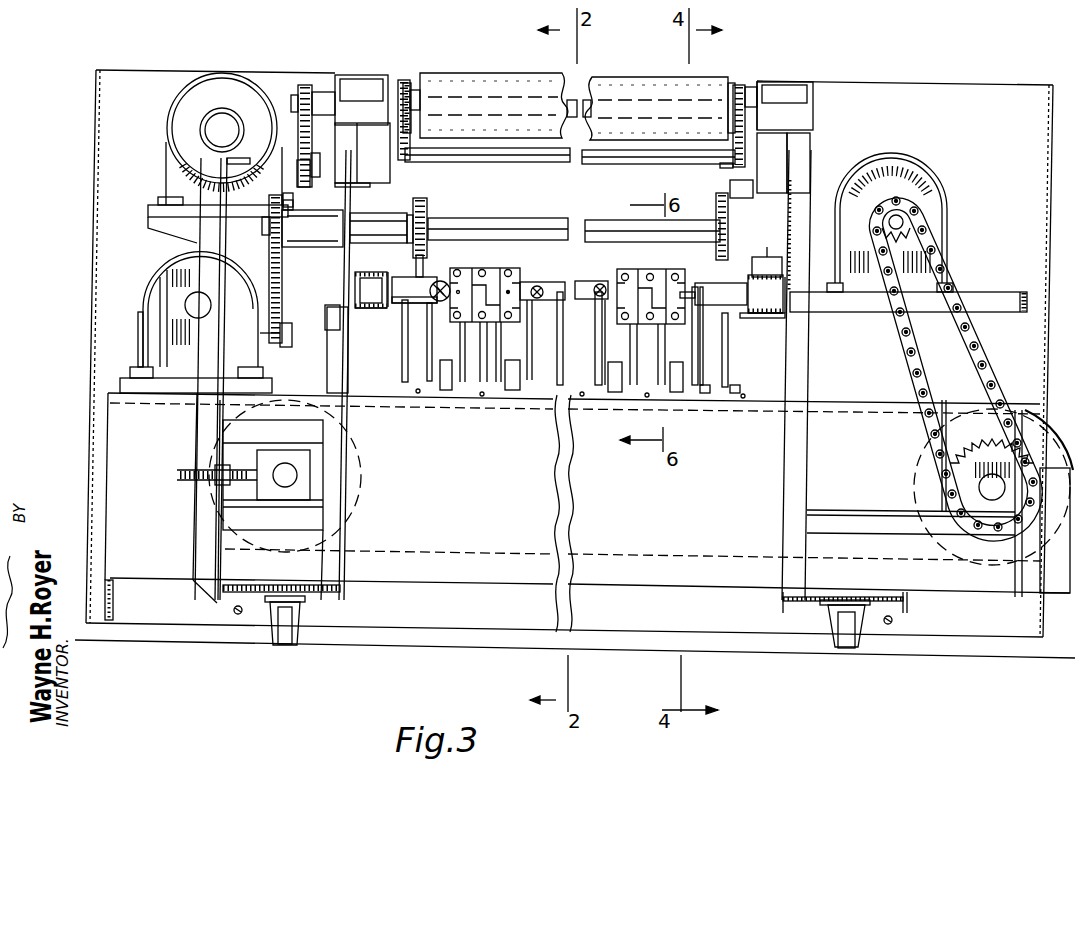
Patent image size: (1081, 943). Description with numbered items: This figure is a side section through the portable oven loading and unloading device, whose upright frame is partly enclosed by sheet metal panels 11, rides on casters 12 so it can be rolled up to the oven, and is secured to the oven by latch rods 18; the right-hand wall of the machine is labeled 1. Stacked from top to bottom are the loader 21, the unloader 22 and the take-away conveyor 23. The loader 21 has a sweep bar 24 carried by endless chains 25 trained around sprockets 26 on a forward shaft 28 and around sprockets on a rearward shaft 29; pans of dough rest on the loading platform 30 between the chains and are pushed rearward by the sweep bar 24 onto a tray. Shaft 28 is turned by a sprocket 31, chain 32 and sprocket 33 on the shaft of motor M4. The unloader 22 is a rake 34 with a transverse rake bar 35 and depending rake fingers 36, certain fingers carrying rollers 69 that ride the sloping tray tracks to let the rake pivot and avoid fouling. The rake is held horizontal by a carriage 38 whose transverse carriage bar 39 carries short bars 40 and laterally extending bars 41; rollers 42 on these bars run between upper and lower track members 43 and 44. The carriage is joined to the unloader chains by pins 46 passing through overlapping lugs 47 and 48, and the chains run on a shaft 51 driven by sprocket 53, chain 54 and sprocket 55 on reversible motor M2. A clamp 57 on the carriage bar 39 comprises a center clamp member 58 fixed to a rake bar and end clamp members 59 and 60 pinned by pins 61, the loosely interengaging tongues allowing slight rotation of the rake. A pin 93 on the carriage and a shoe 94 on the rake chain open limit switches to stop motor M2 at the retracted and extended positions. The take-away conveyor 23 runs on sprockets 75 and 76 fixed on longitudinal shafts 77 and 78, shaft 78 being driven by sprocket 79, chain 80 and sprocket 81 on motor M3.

The machine frame right wall 1 is at (1050, 282).
The sheet metal panels 11 is at (90, 237).
The casters 12 is at (288, 647).
The latch rods 18 is at (236, 615).
The loader 21 is at (457, 158).
The unloader 22 is at (428, 222).
The take-away conveyor 23 is at (488, 470).
The sweep bar 24 is at (530, 162).
The endless chains 25 is at (402, 82).
The sprocket 26 is at (305, 85).
The shaft 28 is at (345, 78).
The shaft 29 is at (815, 113).
The loading platform 30 is at (607, 78).
The sprocket 31 is at (325, 92).
The chain 32 is at (298, 128).
The sprocket 33 is at (312, 185).
The rake 34 is at (730, 372).
The rake bar 35 is at (557, 282).
The rake fingers 36 is at (597, 366).
The carriage 38 is at (402, 345).
The carriage bar 39 is at (525, 283).
The short bar 40 is at (405, 297).
The laterally extending short bar 41 is at (452, 280).
The rollers 42 is at (338, 320).
The upper track member 43 is at (358, 273).
The lower track member 44 is at (368, 300).
The pins 46 is at (414, 272).
The lug 47 is at (432, 283).
The lug 48 is at (735, 393).
The shaft 51 is at (574, 216).
The sprocket 53 is at (298, 247).
The chain 54 is at (284, 290).
The sprocket 55 is at (290, 330).
The clamp 57 is at (640, 268).
The center clamp member 58 is at (653, 268).
The end clamp member 59 is at (693, 285).
The end clamp member 60 is at (630, 270).
The pins 61 is at (625, 297).
The rollers 69 is at (448, 390).
The sprocket 75 is at (360, 488).
The sprocket 76 is at (914, 473).
The shaft 77 is at (290, 475).
The shaft 78 is at (979, 488).
The sprocket 79 is at (983, 413).
The chain 80 is at (990, 358).
The sprocket 81 is at (915, 232).
The pin 93 is at (705, 393).
The shoe 94 is at (756, 183).
The reversible electric motor M2 is at (140, 335).
The electric motor M3 is at (925, 170).
The electric motor M4 is at (222, 75).